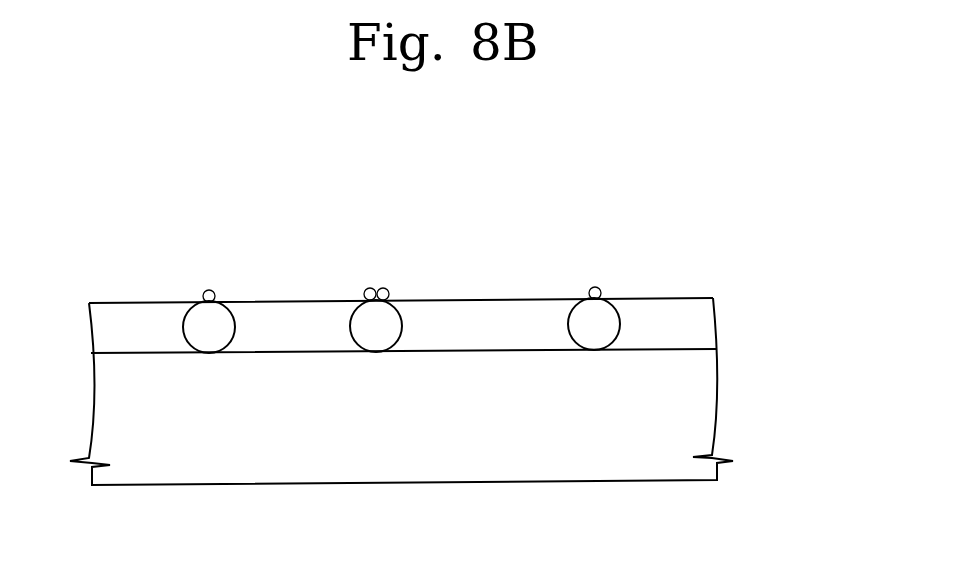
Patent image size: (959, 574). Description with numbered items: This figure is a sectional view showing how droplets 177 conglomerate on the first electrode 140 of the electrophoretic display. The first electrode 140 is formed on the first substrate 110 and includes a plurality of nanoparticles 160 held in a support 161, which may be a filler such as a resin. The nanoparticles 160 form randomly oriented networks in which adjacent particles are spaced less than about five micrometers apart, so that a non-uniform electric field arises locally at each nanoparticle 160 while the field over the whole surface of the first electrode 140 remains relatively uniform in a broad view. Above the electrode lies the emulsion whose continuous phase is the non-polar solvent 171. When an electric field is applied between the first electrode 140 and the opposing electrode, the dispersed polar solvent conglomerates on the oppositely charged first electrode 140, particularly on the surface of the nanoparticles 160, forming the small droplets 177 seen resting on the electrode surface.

The first substrate 110 is at (700, 421).
The first electrode 140 is at (724, 300).
The nanoparticles 160 is at (593, 340).
The support 161 is at (482, 340).
The non-polar solvent 171 is at (597, 286).
The droplets 177 is at (394, 278).